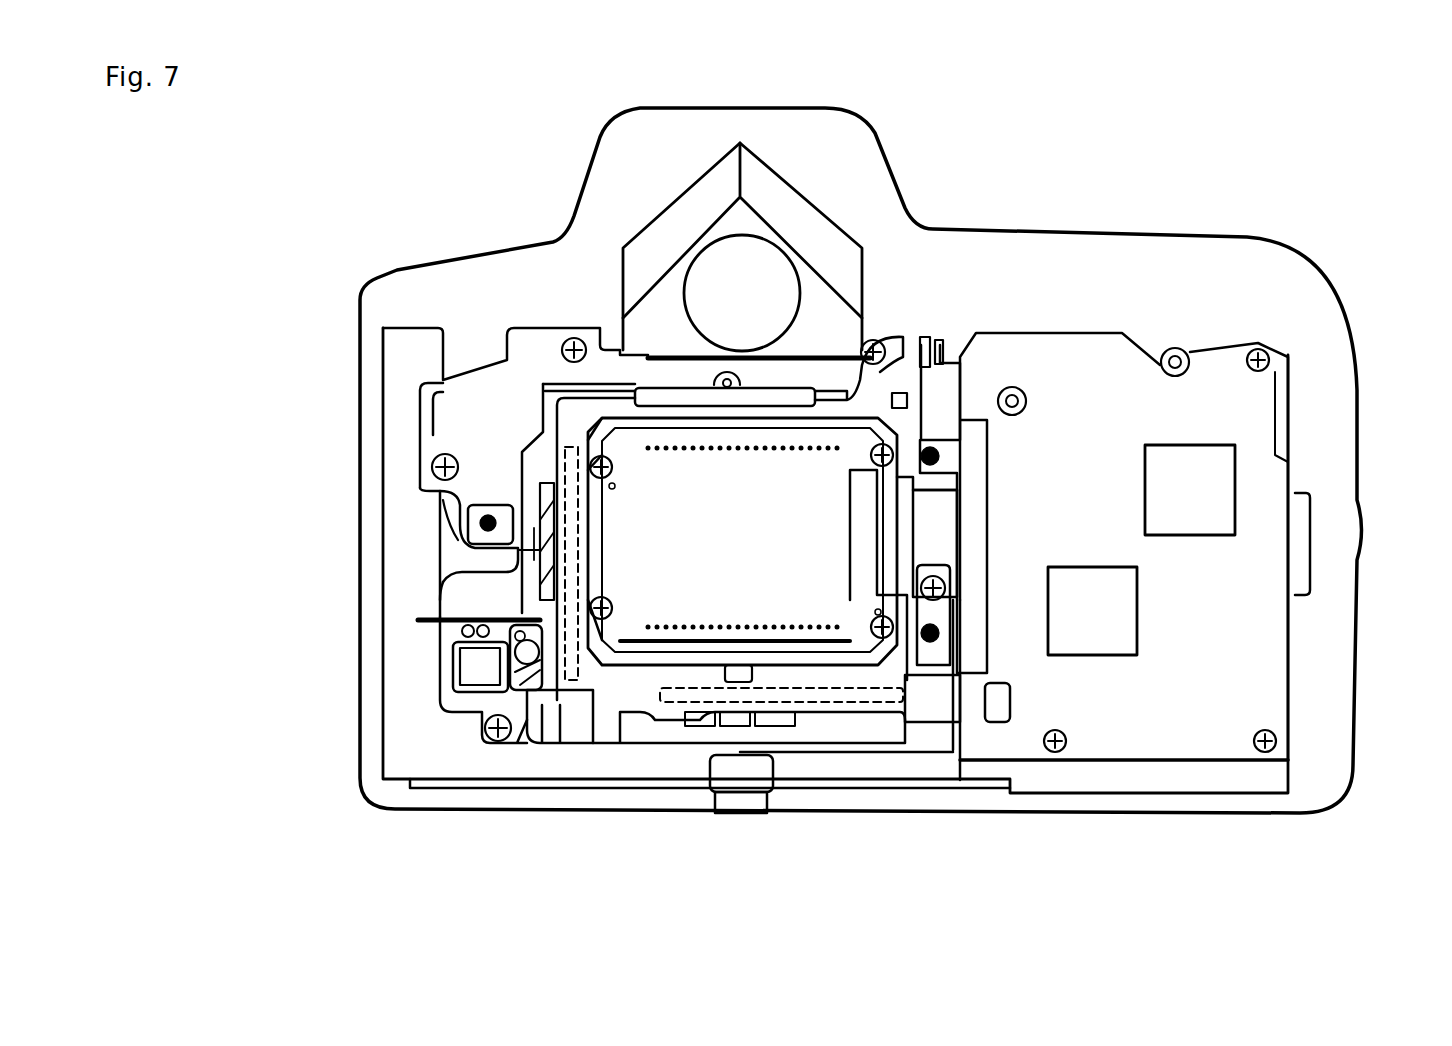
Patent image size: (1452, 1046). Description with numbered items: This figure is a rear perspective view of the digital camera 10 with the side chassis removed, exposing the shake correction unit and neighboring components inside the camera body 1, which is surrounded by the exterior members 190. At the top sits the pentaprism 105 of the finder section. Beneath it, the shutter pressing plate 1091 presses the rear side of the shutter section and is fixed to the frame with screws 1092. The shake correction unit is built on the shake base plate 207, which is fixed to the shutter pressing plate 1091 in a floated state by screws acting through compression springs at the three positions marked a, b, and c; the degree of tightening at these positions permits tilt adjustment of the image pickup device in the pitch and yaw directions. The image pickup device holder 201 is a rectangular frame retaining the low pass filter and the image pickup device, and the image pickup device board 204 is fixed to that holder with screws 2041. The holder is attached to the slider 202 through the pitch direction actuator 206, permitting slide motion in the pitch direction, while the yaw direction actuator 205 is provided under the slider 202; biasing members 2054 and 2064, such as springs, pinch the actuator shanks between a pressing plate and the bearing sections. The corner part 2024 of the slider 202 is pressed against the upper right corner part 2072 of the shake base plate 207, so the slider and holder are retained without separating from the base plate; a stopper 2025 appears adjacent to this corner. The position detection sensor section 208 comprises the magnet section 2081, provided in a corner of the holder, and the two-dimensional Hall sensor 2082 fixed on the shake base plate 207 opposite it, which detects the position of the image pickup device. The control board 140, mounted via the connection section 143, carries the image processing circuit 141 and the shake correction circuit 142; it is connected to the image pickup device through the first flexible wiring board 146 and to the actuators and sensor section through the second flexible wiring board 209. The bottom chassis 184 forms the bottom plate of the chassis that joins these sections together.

The digital camera 10 is at (1298, 226).
The camera body 1 is at (1137, 250).
The exterior members 190 is at (1366, 530).
The pentaprism 105 is at (660, 237).
The screws 1092 is at (572, 338).
The shutter pressing plate 1091 is at (455, 435).
The biasing member 2064 is at (533, 552).
The position a is at (488, 515).
The shake base plate 207 is at (477, 570).
The pitch direction actuator 206 is at (543, 604).
The image pickup device holder 201 is at (589, 745).
The corner part 2024 is at (913, 356).
The stopper 2025 is at (935, 353).
The upper right corner part 2072 is at (948, 378).
The image pickup device board 204 is at (765, 592).
The screws 2041 is at (620, 570).
The first flexible wiring board 146 is at (957, 524).
The position b is at (940, 457).
The position c is at (940, 634).
The second flexible wiring board 209 is at (955, 722).
The slider 202 is at (630, 690).
The yaw direction actuator 205 is at (780, 727).
The biasing member 2054 is at (738, 727).
The two-dimensional Hall sensor 2082 is at (447, 662).
The magnet section 2081 is at (475, 672).
The position detection sensor section 208 is at (458, 697).
The bottom chassis 184 is at (498, 745).
The control board 140 is at (1185, 730).
The connection section 143 is at (1027, 398).
The image processing circuit 141 is at (1175, 447).
The shake correction circuit 142 is at (1083, 657).